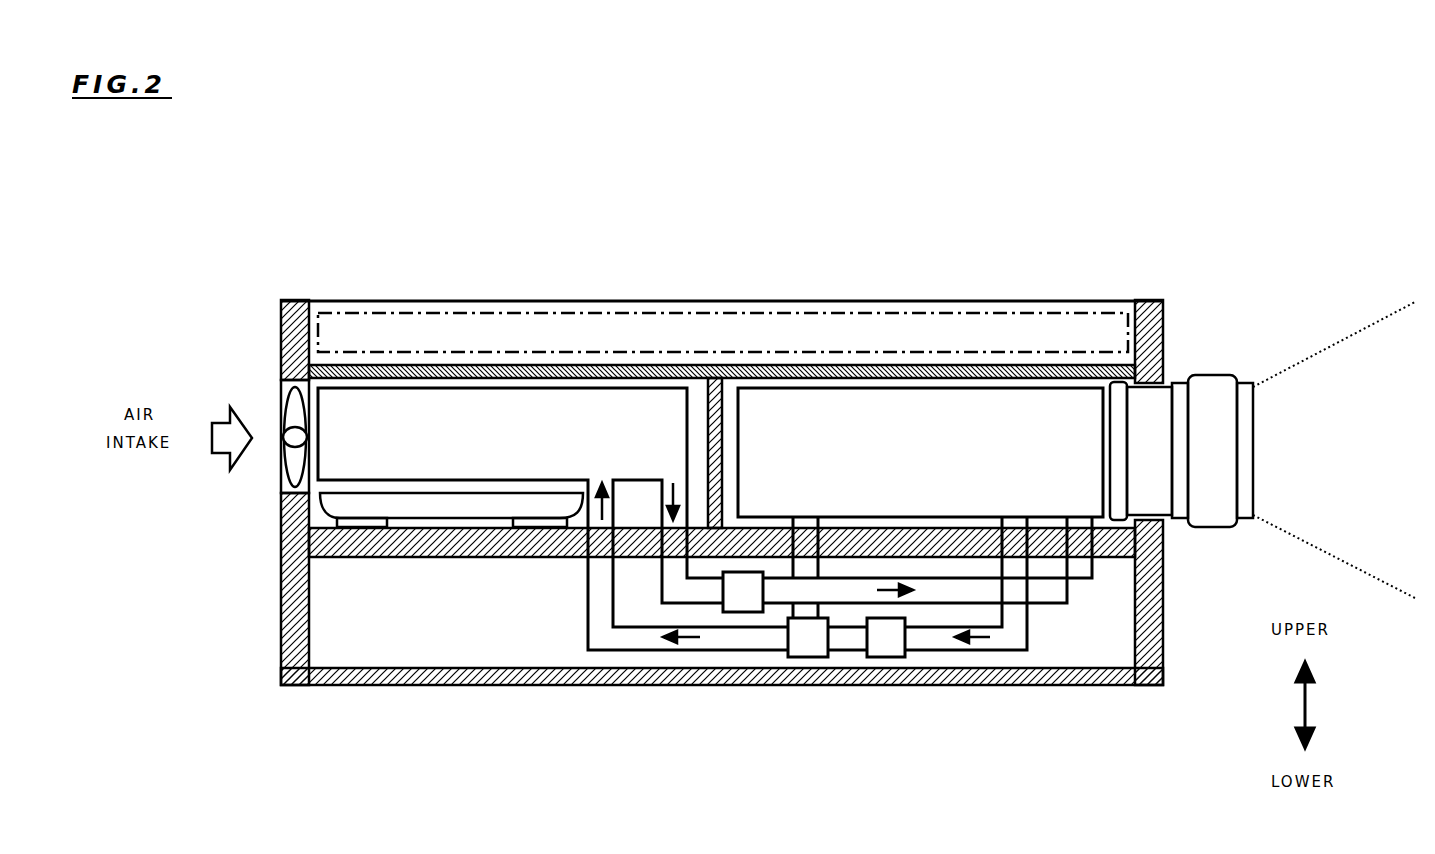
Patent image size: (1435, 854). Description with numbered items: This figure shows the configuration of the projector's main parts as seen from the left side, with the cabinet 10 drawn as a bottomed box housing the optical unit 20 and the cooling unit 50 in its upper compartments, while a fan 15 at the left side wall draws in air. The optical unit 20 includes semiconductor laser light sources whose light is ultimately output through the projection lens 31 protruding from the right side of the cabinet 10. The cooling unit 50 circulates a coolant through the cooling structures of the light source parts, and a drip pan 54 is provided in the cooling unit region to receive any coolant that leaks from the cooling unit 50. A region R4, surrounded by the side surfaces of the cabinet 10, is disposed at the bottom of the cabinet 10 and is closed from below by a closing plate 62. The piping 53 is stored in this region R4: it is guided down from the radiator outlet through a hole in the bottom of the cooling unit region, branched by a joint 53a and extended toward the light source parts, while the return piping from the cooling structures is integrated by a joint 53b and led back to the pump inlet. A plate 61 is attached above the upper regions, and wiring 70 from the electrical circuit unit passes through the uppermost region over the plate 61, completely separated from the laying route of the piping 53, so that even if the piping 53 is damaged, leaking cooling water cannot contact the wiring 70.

The cabinet 10 is at (1152, 300).
The fan 15 is at (273, 390).
The optical unit 20 is at (855, 405).
The projection lens 31 is at (1210, 372).
The cooling unit 50 is at (457, 393).
The piping 53 is at (595, 598).
The joint 53a is at (741, 613).
The joint 53b is at (807, 657).
The drip pan 54 is at (490, 507).
The plate 61 is at (993, 364).
The closing plate 62 is at (1092, 684).
The wiring 70 is at (778, 314).
The region R4 is at (377, 645).